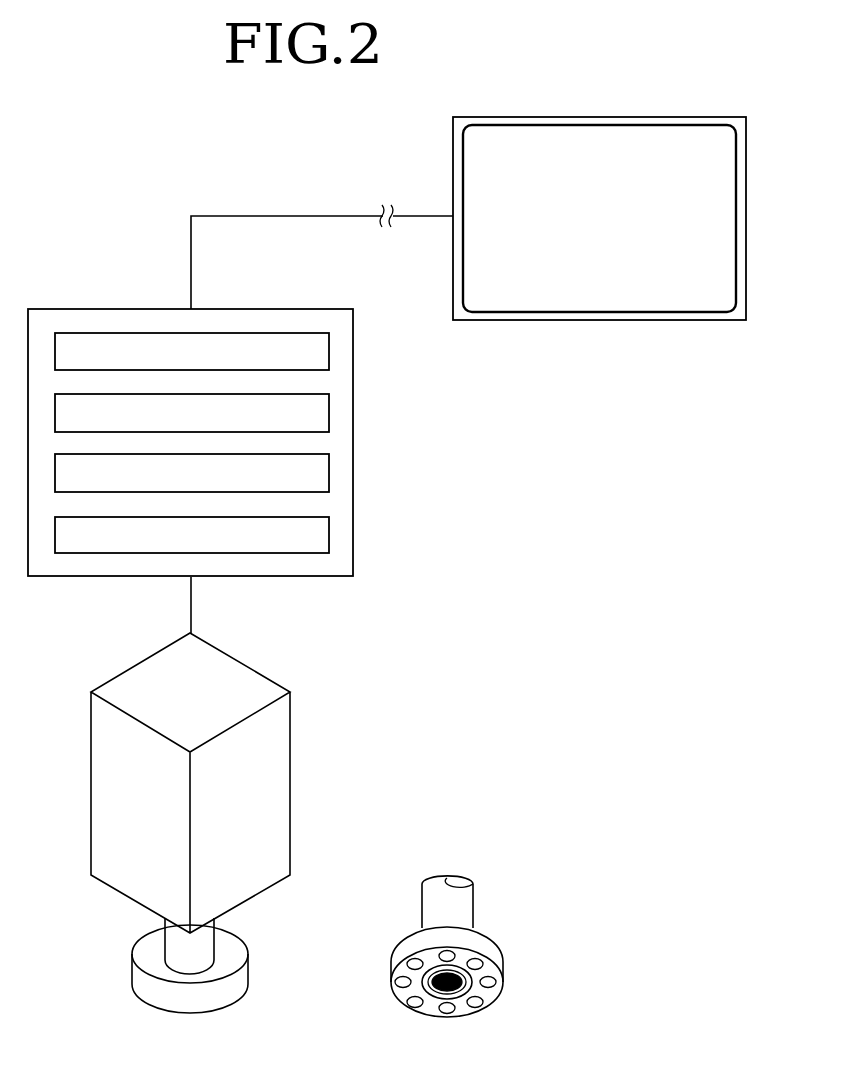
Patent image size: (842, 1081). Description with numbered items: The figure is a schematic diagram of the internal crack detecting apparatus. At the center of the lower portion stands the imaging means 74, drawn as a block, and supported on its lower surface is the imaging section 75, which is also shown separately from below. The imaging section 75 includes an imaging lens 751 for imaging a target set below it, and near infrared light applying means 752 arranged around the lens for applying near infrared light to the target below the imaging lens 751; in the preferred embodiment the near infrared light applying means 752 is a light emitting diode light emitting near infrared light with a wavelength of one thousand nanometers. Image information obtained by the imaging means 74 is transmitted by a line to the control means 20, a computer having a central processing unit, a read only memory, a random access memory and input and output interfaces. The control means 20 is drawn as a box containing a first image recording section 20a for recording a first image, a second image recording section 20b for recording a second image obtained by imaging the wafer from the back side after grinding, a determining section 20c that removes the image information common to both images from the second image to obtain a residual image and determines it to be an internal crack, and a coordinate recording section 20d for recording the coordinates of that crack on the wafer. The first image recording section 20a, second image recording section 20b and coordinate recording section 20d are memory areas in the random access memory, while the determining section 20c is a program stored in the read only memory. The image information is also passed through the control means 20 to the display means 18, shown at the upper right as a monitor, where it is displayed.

The display means 18 is at (686, 114).
The control means 20 is at (92, 308).
The first image recording section 20a is at (330, 349).
The second image recording section 20b is at (330, 411).
The determining section 20c is at (330, 472).
The coordinate recording section 20d is at (330, 533).
The imaging means 74 is at (86, 754).
The imaging section 75 is at (130, 936).
The imaging lens 751 is at (472, 983).
The near infrared light applying means 752 is at (492, 979).